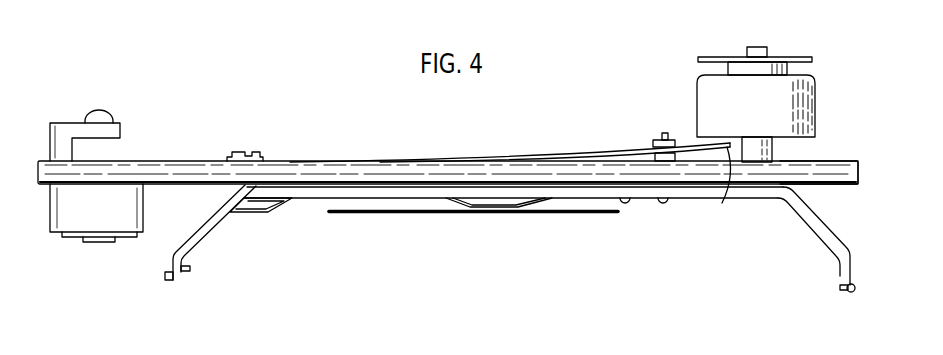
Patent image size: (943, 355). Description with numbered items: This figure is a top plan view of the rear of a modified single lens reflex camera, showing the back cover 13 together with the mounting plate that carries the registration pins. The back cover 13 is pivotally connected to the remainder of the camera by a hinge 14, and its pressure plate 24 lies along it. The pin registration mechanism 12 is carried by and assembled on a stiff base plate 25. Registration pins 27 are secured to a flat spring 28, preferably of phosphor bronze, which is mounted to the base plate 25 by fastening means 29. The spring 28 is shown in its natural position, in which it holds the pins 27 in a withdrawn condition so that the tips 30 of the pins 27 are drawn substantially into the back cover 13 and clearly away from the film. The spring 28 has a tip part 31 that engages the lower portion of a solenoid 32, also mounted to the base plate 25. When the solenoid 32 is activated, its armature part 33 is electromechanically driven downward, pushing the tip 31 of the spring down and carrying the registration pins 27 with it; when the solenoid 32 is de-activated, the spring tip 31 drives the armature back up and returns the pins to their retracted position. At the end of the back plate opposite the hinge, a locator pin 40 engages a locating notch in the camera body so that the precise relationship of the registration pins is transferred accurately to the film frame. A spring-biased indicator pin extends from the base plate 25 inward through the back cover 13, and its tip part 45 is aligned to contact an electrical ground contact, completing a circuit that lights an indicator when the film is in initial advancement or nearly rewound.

The pin registration mechanism 12 is at (292, 154).
The back cover 13 is at (772, 192).
The hinge 14 is at (848, 293).
The pressure plate 24 is at (570, 213).
The base plate 25 is at (815, 170).
The registration pins 27 is at (665, 133).
The flat spring 28 is at (598, 152).
The fastening means 29 is at (258, 150).
The tips of pins 30 is at (663, 203).
The tip part of spring 31 is at (724, 188).
The solenoid 32 is at (805, 92).
The solenoid armature part 33 is at (757, 46).
The locator pin 40 is at (181, 267).
The tip part of indicator pin 45 is at (618, 211).